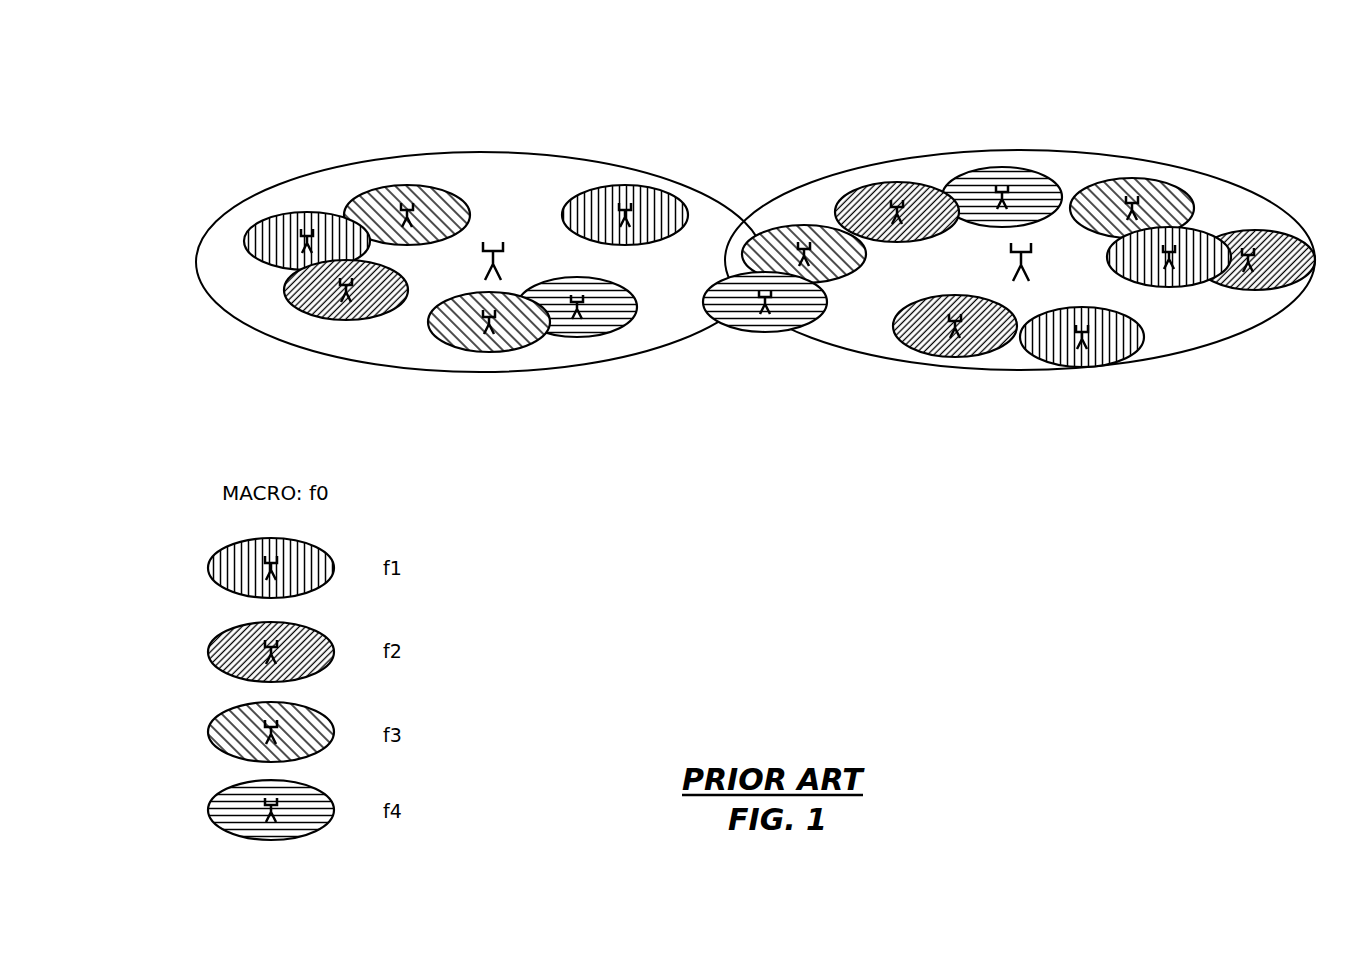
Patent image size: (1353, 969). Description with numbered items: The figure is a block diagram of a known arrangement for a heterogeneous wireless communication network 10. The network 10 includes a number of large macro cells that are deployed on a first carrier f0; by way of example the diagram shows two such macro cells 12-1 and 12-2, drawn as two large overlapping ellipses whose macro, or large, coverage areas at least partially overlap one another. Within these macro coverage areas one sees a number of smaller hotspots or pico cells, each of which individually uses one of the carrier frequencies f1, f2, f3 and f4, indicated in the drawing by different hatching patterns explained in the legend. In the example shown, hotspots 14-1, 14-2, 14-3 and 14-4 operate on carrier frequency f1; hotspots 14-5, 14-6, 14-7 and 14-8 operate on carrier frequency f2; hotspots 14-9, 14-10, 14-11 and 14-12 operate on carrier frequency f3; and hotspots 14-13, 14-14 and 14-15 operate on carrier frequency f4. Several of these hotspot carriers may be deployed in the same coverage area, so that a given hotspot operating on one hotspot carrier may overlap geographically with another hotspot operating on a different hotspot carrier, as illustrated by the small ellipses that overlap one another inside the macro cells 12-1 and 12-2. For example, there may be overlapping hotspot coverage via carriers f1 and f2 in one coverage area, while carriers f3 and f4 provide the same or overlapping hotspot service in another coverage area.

The wireless communication network 10 is at (255, 124).
The macro cell 12-1 is at (868, 356).
The macro cell 12-2 is at (675, 353).
The hotspot 14-1 is at (1081, 367).
The hotspot 14-2 is at (1168, 288).
The hotspot 14-3 is at (625, 185).
The hotspot 14-4 is at (307, 212).
The hotspot 14-5 is at (1283, 290).
The hotspot 14-6 is at (900, 183).
The hotspot 14-7 is at (955, 357).
The hotspot 14-8 is at (348, 320).
The hotspot 14-9 is at (1133, 179).
The hotspot 14-10 is at (746, 250).
The hotspot 14-11 is at (490, 352).
The hotspot 14-12 is at (407, 185).
The hotspot 14-13 is at (818, 331).
The hotspot 14-14 is at (577, 337).
The hotspot 14-15 is at (1001, 168).